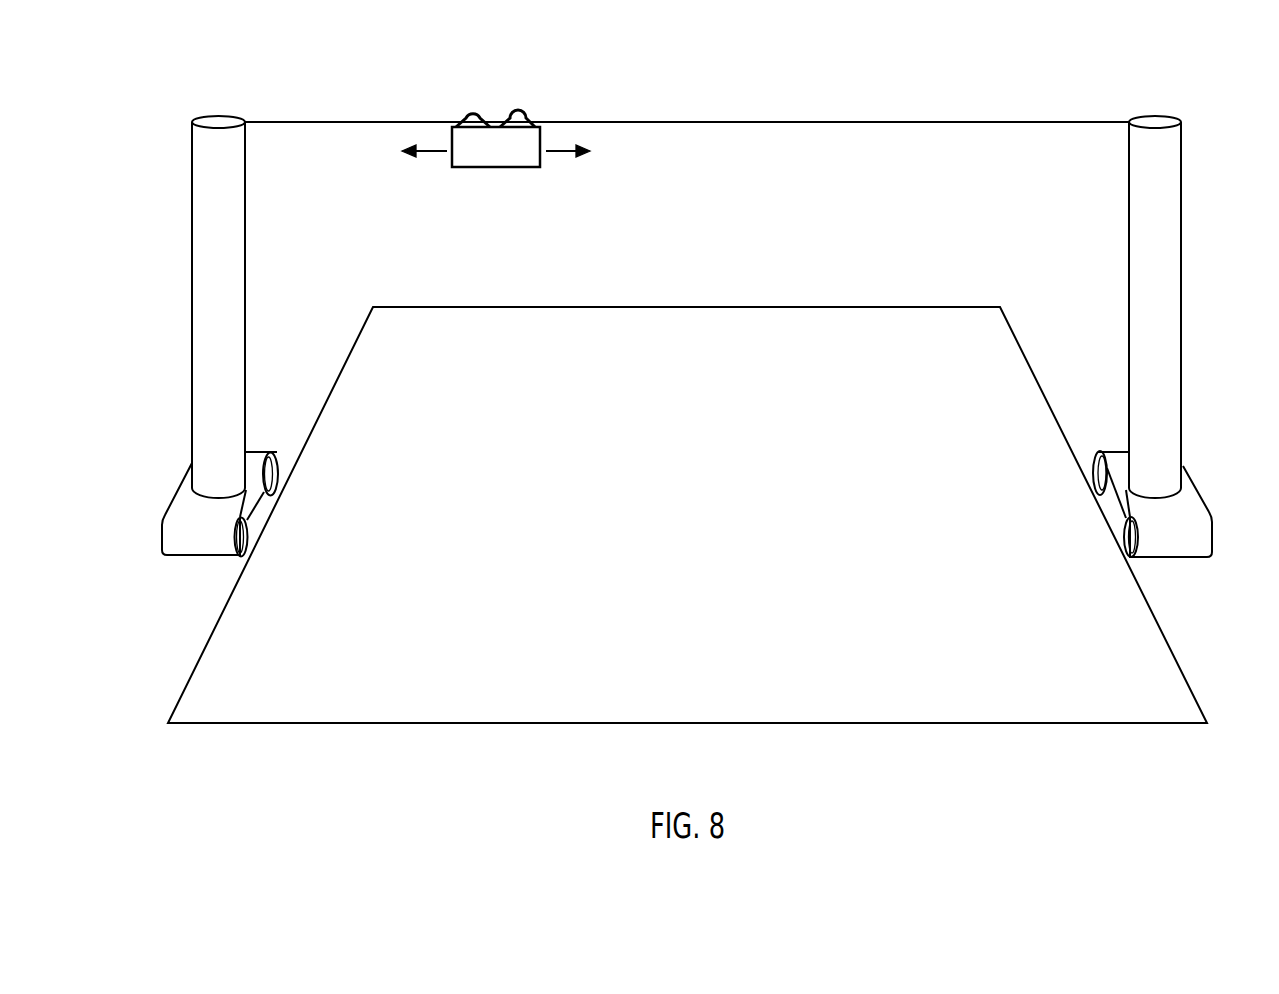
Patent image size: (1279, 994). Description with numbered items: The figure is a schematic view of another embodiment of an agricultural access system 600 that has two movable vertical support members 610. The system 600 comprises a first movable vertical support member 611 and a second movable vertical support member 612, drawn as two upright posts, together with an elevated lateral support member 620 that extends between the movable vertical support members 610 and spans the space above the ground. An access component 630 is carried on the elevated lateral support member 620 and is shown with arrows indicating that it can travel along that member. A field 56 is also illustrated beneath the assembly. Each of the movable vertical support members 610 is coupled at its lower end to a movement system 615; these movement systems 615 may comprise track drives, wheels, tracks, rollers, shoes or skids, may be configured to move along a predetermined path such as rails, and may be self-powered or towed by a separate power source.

The field 56 is at (941, 723).
The agricultural access system 600 is at (214, 54).
The movable vertical support members 610 is at (687, 307).
The first movable vertical support member 611 is at (1167, 235).
The second movable vertical support member 612 is at (208, 237).
The movement systems 615 is at (203, 548).
The elevated lateral support member 620 is at (695, 121).
The access component 630 is at (505, 157).